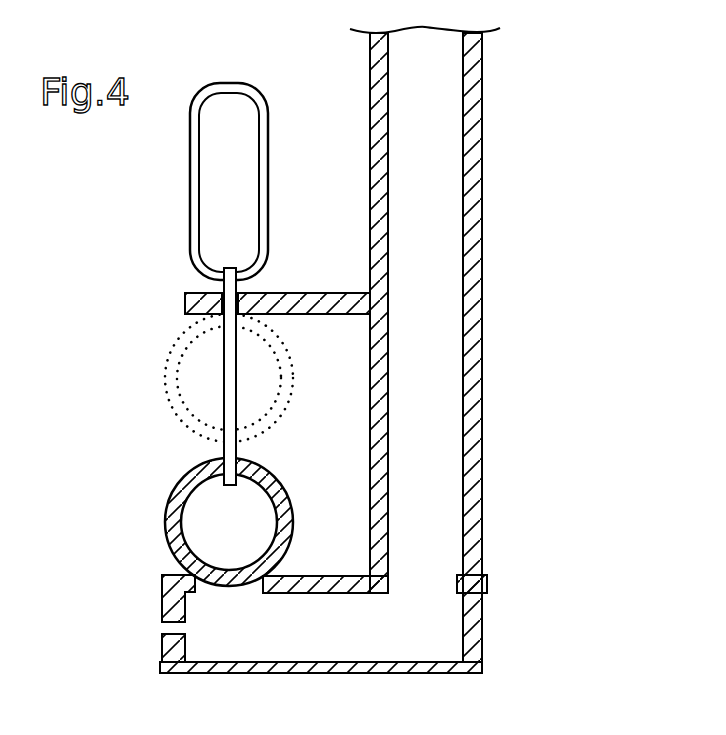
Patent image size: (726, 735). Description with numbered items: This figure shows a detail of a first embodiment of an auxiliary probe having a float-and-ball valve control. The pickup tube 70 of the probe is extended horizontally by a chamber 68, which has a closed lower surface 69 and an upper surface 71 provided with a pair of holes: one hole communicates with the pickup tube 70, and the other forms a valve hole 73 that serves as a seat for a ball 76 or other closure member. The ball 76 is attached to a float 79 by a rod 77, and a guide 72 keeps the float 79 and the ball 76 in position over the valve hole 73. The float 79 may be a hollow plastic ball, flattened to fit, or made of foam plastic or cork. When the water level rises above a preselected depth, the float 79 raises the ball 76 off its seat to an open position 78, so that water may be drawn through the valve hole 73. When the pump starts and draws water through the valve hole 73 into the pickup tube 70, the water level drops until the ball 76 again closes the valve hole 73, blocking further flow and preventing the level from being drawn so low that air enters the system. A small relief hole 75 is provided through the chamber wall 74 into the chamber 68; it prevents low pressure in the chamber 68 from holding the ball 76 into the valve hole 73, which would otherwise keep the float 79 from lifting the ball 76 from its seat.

The chamber 68 is at (340, 639).
The closed lower surface 69 is at (390, 673).
The pickup tube 70 is at (482, 90).
The upper surface 71 is at (341, 575).
The guide 72 is at (332, 293).
The valve hole 73 is at (233, 590).
The chamber wall 74 is at (170, 613).
The relief hole 75 is at (170, 630).
The ball 76 is at (167, 519).
The rod 77 is at (224, 452).
The open position 78 is at (175, 408).
The float 79 is at (191, 238).